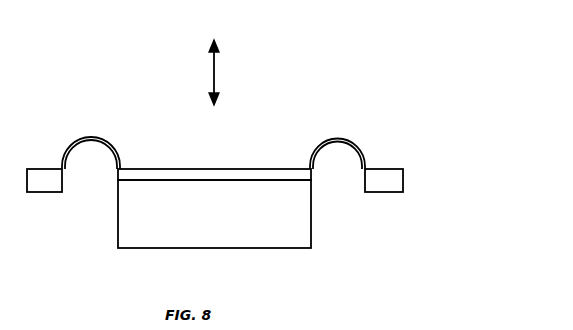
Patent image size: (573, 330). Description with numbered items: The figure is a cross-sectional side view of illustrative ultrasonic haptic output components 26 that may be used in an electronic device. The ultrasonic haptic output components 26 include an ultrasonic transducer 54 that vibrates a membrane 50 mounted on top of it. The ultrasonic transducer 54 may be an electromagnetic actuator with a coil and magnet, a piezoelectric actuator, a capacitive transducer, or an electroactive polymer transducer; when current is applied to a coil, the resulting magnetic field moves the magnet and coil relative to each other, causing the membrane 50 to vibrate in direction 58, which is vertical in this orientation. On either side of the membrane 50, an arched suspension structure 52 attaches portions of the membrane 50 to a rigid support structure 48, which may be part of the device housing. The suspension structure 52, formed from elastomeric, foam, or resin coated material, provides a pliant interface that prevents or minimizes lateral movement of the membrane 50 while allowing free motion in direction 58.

The ultrasonic haptic output components 26 is at (283, 82).
The support structure 48 is at (48, 192).
The membrane 50 is at (185, 169).
The suspension structure 52 is at (93, 137).
The ultrasonic transducer 54 is at (288, 248).
The direction 58 is at (212, 73).